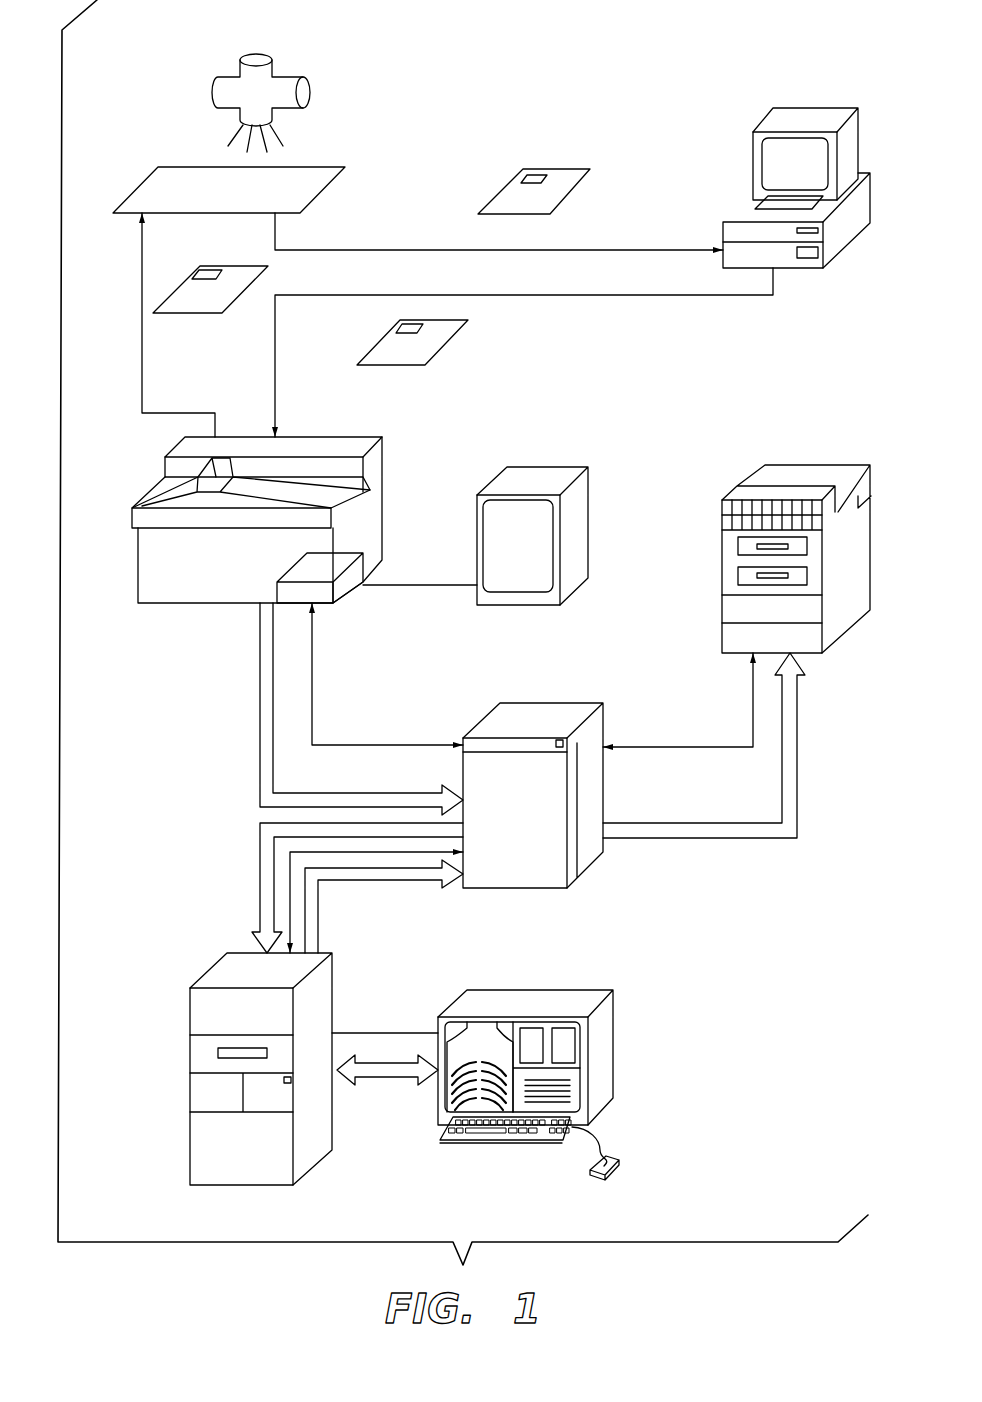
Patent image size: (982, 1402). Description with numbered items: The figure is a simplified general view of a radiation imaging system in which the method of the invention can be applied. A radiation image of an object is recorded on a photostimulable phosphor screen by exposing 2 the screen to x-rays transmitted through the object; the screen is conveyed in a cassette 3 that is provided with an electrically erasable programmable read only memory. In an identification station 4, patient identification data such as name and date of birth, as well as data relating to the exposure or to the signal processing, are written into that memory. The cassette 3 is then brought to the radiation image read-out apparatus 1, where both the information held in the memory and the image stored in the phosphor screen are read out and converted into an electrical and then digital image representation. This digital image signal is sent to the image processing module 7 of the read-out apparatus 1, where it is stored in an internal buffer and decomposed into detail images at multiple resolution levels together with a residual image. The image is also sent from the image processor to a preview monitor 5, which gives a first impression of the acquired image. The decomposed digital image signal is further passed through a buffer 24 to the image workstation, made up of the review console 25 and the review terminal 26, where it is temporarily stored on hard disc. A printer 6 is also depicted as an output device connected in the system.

The radiation image read-out apparatus 1 is at (232, 520).
The exposing 2 is at (285, 80).
The cassette 3 is at (570, 178).
The identification station 4 is at (757, 138).
The preview monitor 5 is at (580, 545).
The printer 6 is at (727, 578).
The image processing module 7 is at (312, 567).
The buffer 24 is at (584, 710).
The review console 25 is at (203, 1003).
The review terminal 26 is at (593, 995).